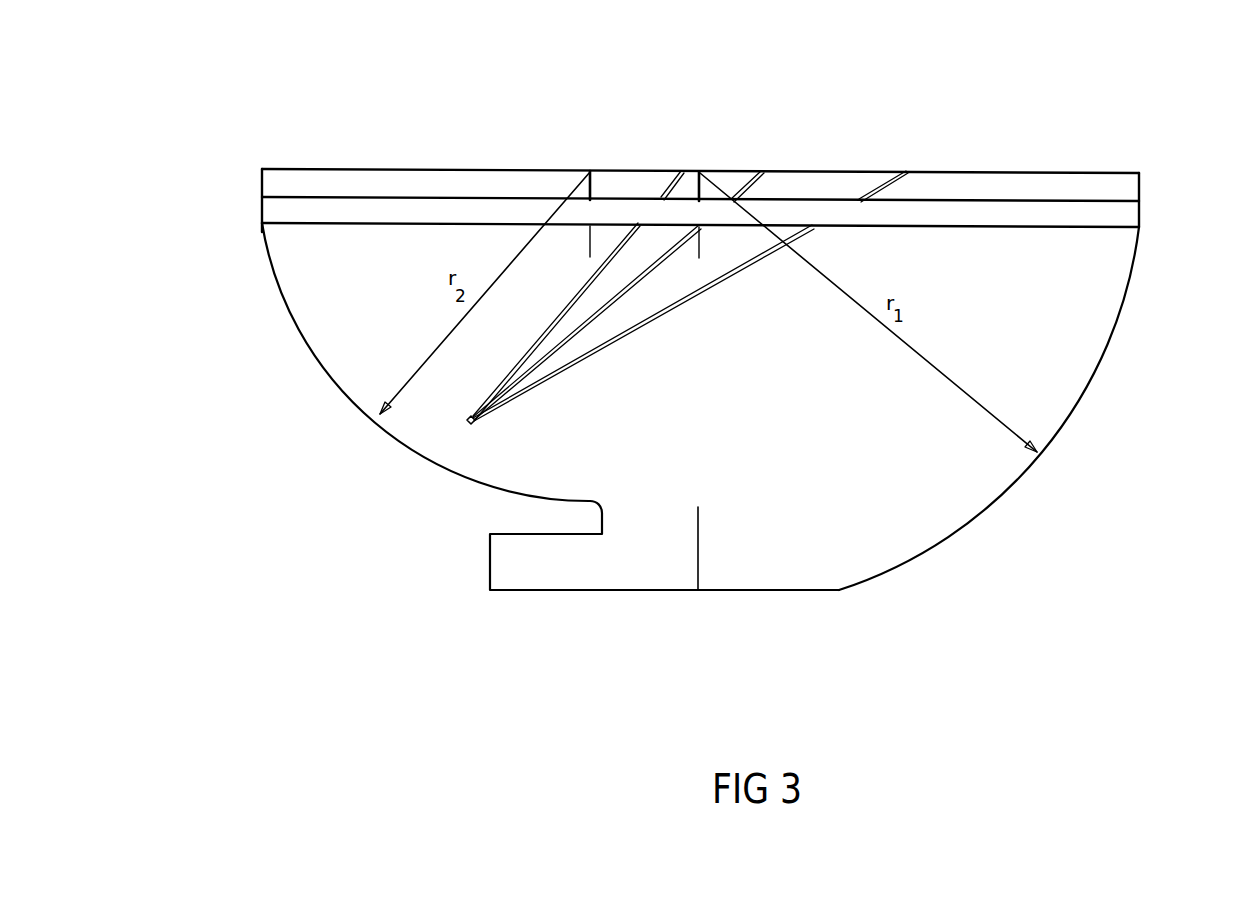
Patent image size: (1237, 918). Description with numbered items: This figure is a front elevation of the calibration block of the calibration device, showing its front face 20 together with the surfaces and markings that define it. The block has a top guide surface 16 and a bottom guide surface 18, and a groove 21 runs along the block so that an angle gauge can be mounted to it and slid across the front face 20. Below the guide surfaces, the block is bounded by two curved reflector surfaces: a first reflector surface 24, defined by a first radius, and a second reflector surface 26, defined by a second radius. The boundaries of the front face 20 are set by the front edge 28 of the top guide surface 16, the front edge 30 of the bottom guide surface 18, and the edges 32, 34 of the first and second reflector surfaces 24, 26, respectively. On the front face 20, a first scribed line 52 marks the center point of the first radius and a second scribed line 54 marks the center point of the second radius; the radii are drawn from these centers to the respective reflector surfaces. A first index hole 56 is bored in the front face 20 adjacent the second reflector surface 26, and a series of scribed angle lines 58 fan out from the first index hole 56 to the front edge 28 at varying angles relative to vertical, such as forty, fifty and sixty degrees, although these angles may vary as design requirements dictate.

The top guide surface 16 is at (408, 169).
The bottom guide surface 18 is at (598, 590).
The front face 20 is at (325, 306).
The groove 21 is at (938, 208).
The first reflector surface 24 is at (1133, 262).
The second reflector surface 26 is at (263, 240).
The front edge of the top guide surface 28 is at (1055, 172).
The front edge of the bottom guide surface 30 is at (785, 590).
The edge of the first reflector surface 32 is at (1076, 403).
The edge of the second reflector surface 34 is at (353, 397).
The first scribed line 52 is at (688, 171).
The second scribed line 54 is at (600, 177).
The first index hole 56 is at (471, 424).
The scribed angle lines 58 is at (538, 342).